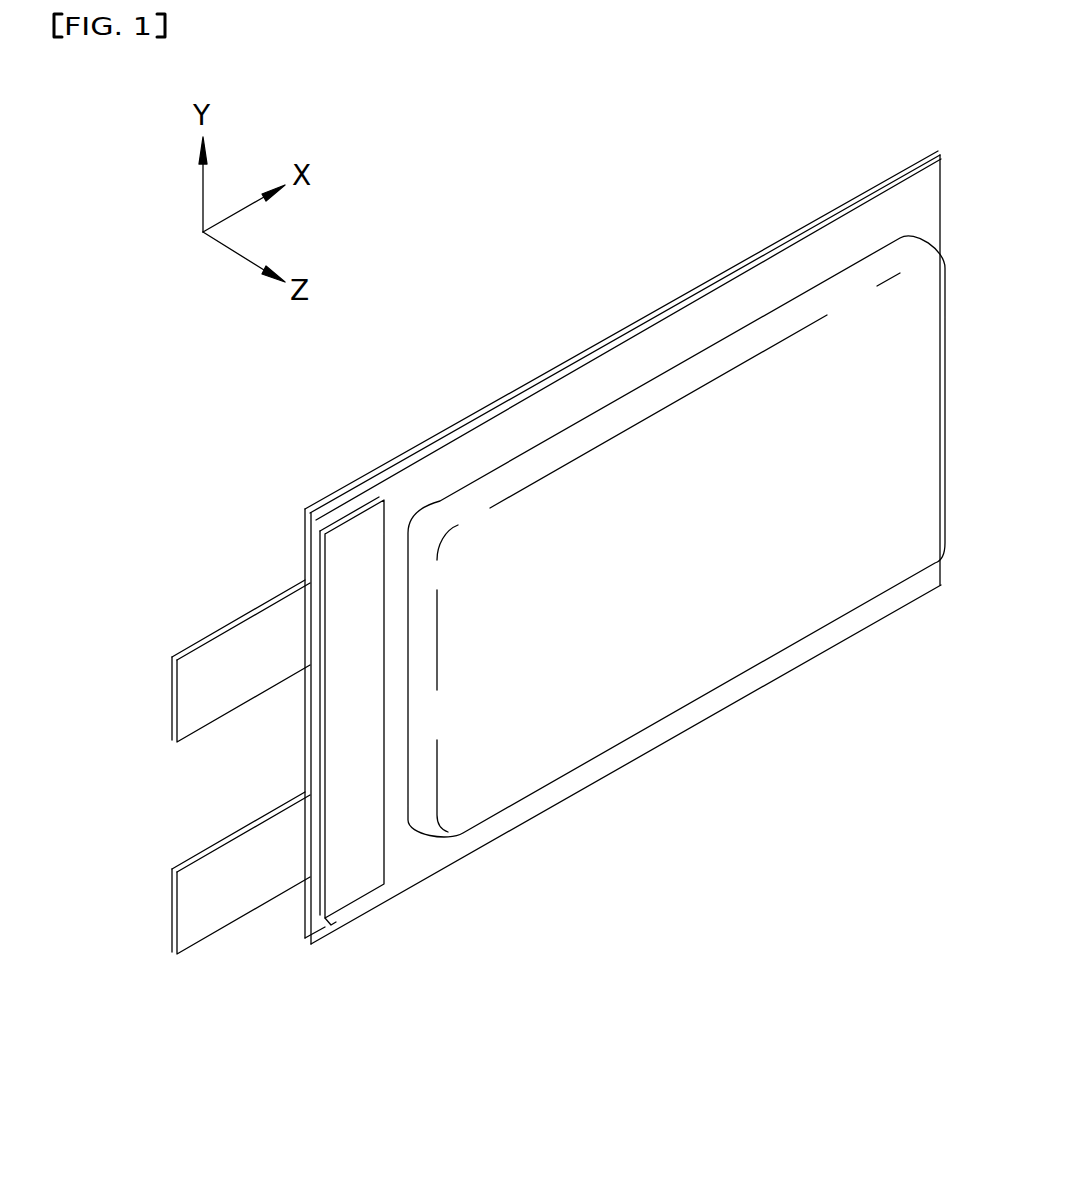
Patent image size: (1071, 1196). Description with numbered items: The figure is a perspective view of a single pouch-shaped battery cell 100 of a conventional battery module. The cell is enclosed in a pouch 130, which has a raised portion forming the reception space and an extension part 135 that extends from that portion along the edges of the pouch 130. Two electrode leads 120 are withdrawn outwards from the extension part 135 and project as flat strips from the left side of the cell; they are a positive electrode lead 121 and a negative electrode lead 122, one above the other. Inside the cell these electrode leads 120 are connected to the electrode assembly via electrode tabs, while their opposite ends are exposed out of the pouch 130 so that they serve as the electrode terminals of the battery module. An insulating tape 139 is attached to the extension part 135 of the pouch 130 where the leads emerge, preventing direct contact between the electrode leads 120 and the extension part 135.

The battery cell 100 is at (155, 388).
The electrode leads 120 is at (100, 765).
The positive electrode lead 121 is at (193, 703).
The negative electrode lead 122 is at (243, 872).
The pouch 130 is at (712, 333).
The extension part 135 is at (312, 941).
The insulating tape 139 is at (355, 867).